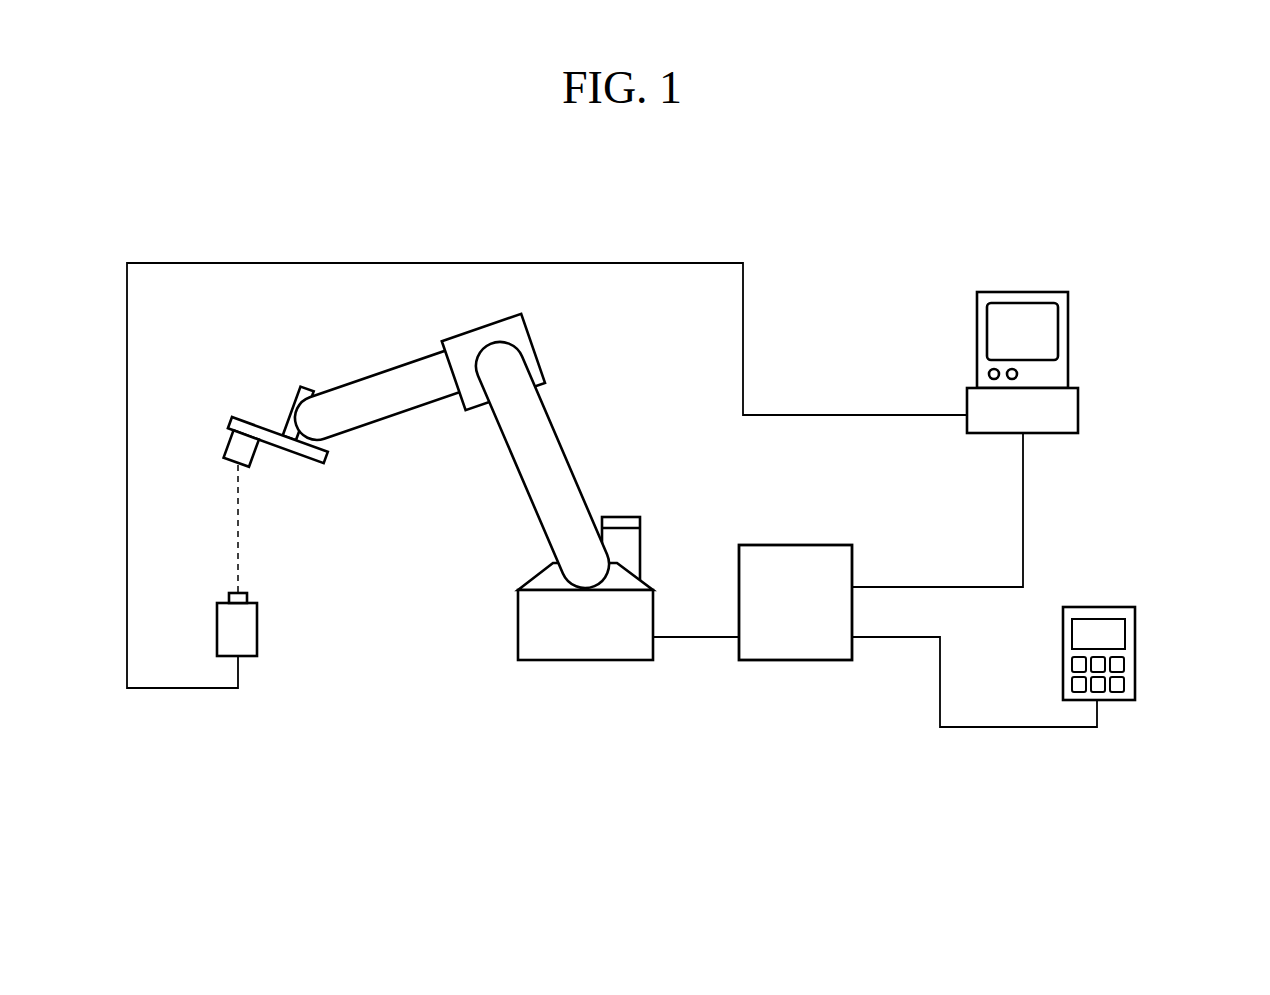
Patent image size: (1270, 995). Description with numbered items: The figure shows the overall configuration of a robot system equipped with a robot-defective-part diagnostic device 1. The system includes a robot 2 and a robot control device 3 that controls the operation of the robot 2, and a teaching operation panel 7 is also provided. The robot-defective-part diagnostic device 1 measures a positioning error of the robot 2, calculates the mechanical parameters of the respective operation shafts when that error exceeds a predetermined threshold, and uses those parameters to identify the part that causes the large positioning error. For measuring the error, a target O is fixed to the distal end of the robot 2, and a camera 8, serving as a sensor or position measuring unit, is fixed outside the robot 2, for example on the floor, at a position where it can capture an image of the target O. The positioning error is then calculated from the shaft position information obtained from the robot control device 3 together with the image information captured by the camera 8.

The robot-defective-part diagnostic device 1 is at (1035, 256).
The robot 2 is at (599, 415).
The robot control device 3 is at (793, 662).
The teaching operation panel 7 is at (1135, 650).
The camera 8 is at (258, 628).
The target O is at (258, 455).